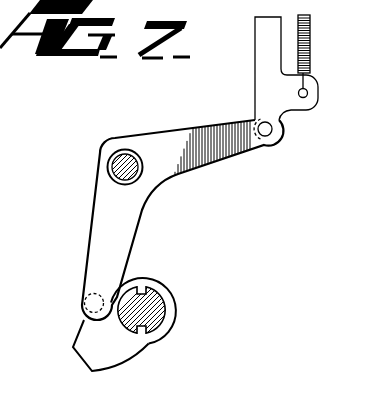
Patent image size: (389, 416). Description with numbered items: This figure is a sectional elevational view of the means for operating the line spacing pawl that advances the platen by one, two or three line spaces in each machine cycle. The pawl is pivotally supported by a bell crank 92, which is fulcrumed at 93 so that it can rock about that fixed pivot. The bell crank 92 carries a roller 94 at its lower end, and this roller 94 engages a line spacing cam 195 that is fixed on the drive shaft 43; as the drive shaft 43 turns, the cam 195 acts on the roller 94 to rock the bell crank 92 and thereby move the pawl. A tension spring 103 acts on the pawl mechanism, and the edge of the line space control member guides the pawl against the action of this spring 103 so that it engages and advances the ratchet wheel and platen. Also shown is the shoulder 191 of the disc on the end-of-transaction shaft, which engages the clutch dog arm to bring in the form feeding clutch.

The bell crank 92 is at (170, 180).
The fulcrum 93 is at (125, 151).
The roller 94 is at (83, 297).
The drive shaft 43 is at (171, 293).
The shoulder 191 is at (256, 70).
The tension spring 103 is at (311, 60).
The line spacing cam 195 is at (143, 344).